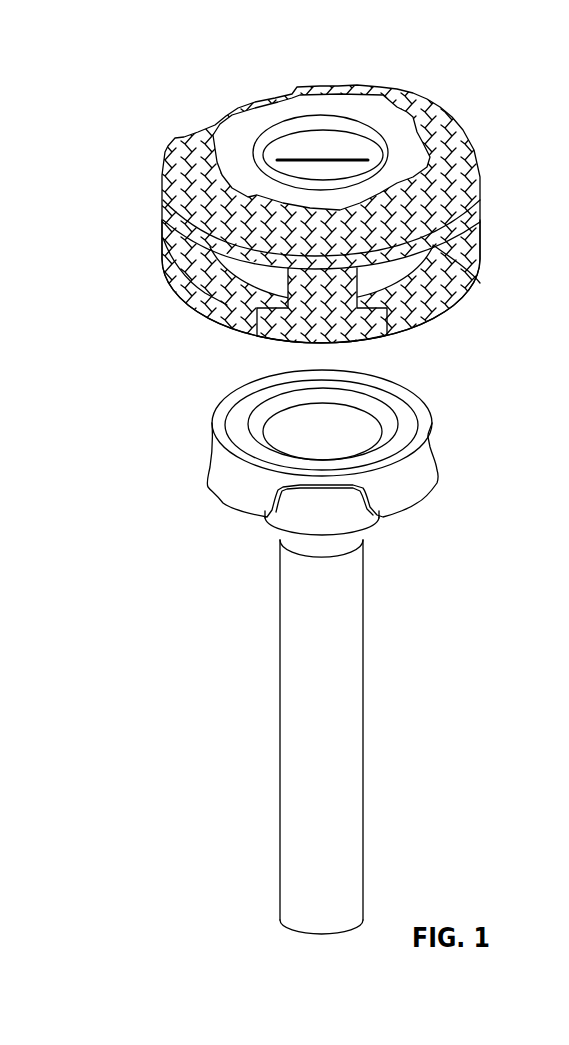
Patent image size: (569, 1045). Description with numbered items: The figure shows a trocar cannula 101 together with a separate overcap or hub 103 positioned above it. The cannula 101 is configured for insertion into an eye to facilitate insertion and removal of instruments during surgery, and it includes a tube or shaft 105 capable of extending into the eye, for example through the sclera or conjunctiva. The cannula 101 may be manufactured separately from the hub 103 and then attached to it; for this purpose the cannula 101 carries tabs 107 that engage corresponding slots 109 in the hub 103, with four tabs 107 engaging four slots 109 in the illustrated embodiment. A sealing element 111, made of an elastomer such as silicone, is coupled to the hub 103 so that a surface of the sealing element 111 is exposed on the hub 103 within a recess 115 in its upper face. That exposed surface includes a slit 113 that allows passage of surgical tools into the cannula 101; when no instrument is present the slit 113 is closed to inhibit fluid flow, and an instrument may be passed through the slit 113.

The trocar cannula 101 is at (296, 652).
The hub 103 is at (268, 184).
The shaft 105 is at (280, 672).
The tabs 107 is at (232, 497).
The slots 109 is at (193, 281).
The sealing element 111 is at (321, 184).
The slit 113 is at (324, 160).
The recess 115 is at (303, 125).